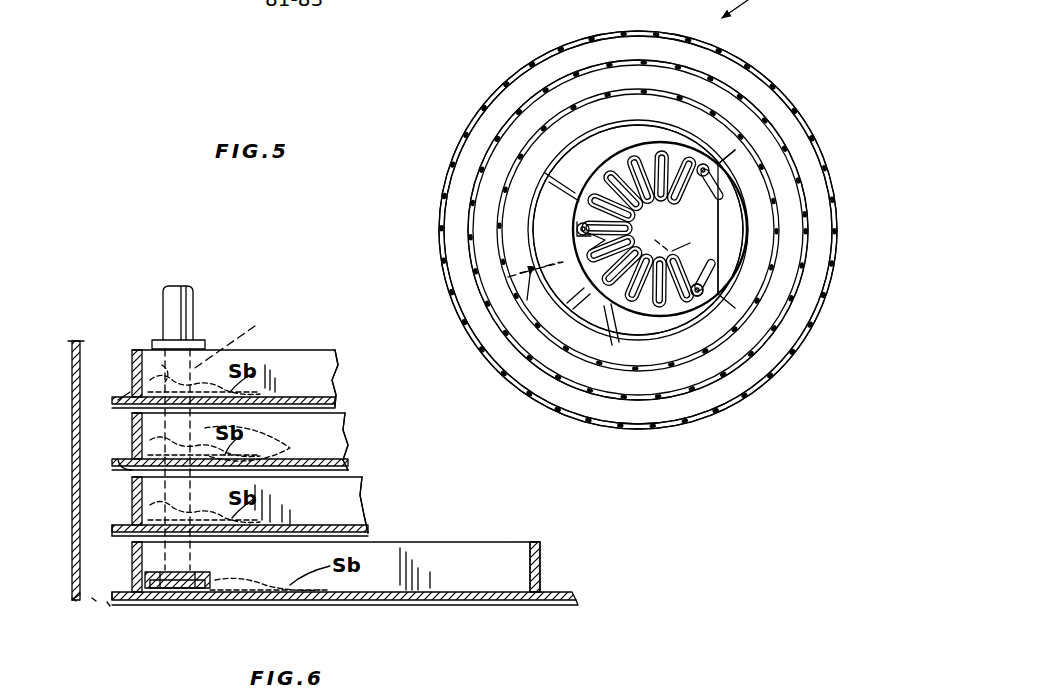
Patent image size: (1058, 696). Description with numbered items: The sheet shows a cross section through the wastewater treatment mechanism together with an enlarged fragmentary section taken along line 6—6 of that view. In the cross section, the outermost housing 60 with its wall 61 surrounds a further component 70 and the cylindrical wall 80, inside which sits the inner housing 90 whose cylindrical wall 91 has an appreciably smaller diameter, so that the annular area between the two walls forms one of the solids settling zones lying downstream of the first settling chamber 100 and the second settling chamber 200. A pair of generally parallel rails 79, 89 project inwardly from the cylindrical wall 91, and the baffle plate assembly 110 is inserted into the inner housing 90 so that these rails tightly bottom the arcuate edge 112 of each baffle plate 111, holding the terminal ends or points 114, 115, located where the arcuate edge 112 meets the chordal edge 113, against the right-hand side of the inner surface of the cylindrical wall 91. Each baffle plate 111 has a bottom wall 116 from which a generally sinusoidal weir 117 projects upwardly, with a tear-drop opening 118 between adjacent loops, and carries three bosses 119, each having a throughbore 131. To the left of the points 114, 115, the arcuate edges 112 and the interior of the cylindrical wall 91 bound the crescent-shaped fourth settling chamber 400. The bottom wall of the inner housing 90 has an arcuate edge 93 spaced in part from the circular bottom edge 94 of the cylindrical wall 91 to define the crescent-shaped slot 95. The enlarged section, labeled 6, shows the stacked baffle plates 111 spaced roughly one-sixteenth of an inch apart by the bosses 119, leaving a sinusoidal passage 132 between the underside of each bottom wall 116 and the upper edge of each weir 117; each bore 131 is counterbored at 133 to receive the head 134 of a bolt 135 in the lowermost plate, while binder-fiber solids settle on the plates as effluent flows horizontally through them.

In FIG. 5, the first solids settling chamber 100 is at (563, 66).
In FIG. 5, the second settling chamber 200 is at (510, 116).
In FIG. 5, the baffle plate assembly 110 is at (600, 160).
In FIG. 6, the baffle plate assembly 110 is at (331, 330).
In FIG. 5, the rail 79 is at (560, 182).
In FIG. 5, the inner housing 90 is at (522, 199).
In FIG. 6, the inner housing 90 is at (87, 356).
In FIG. 5, the throughbore 131 is at (706, 164).
In FIG. 6, the throughbore 131 is at (244, 342).
In FIG. 5, the outer shell wall 61 is at (768, 78).
In FIG. 5, the outermost housing 60 is at (814, 126).
In FIG. 5, the terminal end 114 is at (730, 173).
In FIG. 5, the chordal edge 113 is at (720, 212).
In FIG. 5, the cylindrical wall 91 is at (750, 247).
In FIG. 6, the cylindrical wall 91 is at (72, 478).
In FIG. 5, the terminal end 115 is at (704, 292).
In FIG. 5, the cylindrical wall 80 is at (716, 352).
In FIG. 5, the component of wastewater treatment mechanism 70 is at (638, 402).
In FIG. 5, the tear-drop opening 118 is at (663, 145).
In FIG. 5, the fourth settling chamber 400 is at (600, 311).
In FIG. 6, the fourth settling chamber 400 is at (121, 336).
In FIG. 5, the rail 89 is at (588, 325).
In FIG. 5, the arcuate edge 112 is at (622, 146).
In FIG. 6, the arcuate edge 112 is at (120, 585).
In FIG. 5, the bottom wall 116 is at (676, 223).
In FIG. 6, the bottom wall 116 is at (342, 398).
In FIG. 5, the boss 119 is at (577, 222).
In FIG. 6, the boss 119 is at (203, 344).
In FIG. 5, the section line 6- 6 is at (605, 265).
In FIG. 5, the baffle plate 111 is at (580, 282).
In FIG. 6, the baffle plate 111 is at (338, 362).
In FIG. 6, the bolt 135 is at (190, 289).
In FIG. 6, the sinusoidal weir 117 is at (319, 383).
In FIG. 6, the sinusoidal passage 132 is at (120, 468).
In FIG. 6, the counterbore 133 is at (200, 582).
In FIG. 6, the head 134 is at (175, 590).
In FIG. 6, the arcuate edge 93 is at (107, 603).
In FIG. 6, the circular bottom edge 94 is at (74, 597).
In FIG. 6, the crescent-shaped slot 95 is at (95, 599).